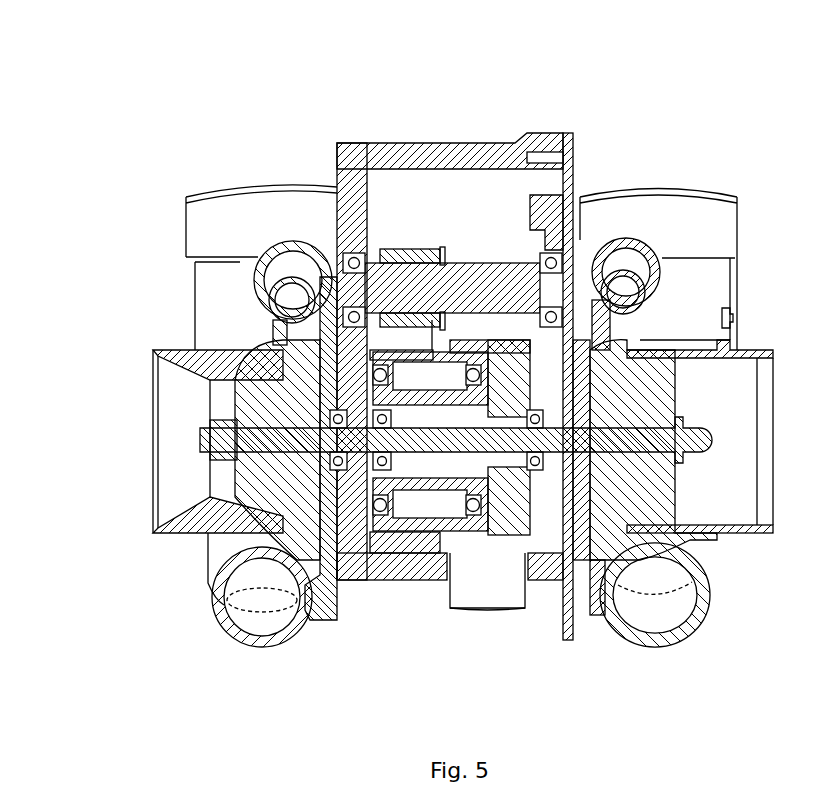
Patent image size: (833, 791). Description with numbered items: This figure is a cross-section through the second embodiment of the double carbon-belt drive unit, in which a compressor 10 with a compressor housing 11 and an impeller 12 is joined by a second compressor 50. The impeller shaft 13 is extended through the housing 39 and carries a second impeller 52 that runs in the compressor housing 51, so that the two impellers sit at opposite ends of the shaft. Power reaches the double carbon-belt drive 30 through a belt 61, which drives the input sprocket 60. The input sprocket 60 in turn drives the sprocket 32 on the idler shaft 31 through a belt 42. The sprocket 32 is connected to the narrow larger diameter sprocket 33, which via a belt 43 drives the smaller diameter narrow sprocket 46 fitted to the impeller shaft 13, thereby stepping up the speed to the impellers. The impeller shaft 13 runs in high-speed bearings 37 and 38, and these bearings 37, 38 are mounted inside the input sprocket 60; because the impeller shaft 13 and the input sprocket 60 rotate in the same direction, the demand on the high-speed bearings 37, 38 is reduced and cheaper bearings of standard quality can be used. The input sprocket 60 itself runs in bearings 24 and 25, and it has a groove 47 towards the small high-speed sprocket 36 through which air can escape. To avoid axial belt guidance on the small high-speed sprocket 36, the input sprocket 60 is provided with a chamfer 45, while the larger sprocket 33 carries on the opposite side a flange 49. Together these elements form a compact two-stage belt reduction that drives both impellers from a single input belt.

The compressor 10 is at (720, 173).
The compressor housing 11 is at (660, 268).
The impeller 12 is at (678, 400).
The impeller shaft 13 is at (712, 440).
The bearing 24 is at (388, 540).
The bearing 25 is at (447, 578).
The double carbon-belt drive 30 is at (437, 98).
The idler shaft 31 is at (332, 257).
The sprocket 32 is at (387, 248).
The narrow larger diameter sprocket 33 is at (548, 192).
The small high-speed sprocket 36 is at (683, 560).
The high-speed bearing 37 is at (676, 541).
The high-speed bearing 38 is at (368, 582).
The housing 39 is at (343, 590).
The belt 42 is at (372, 302).
The belt 43 is at (643, 338).
The chamfer 45 is at (529, 553).
The smaller diameter narrow sprocket 46 is at (731, 313).
The groove 47 is at (700, 592).
The flange 49 is at (562, 192).
The second compressor 50 is at (263, 600).
The compressor housing 51 is at (268, 647).
The second impeller 52 is at (232, 403).
The input sprocket 60 is at (480, 545).
The belt 61 is at (484, 608).